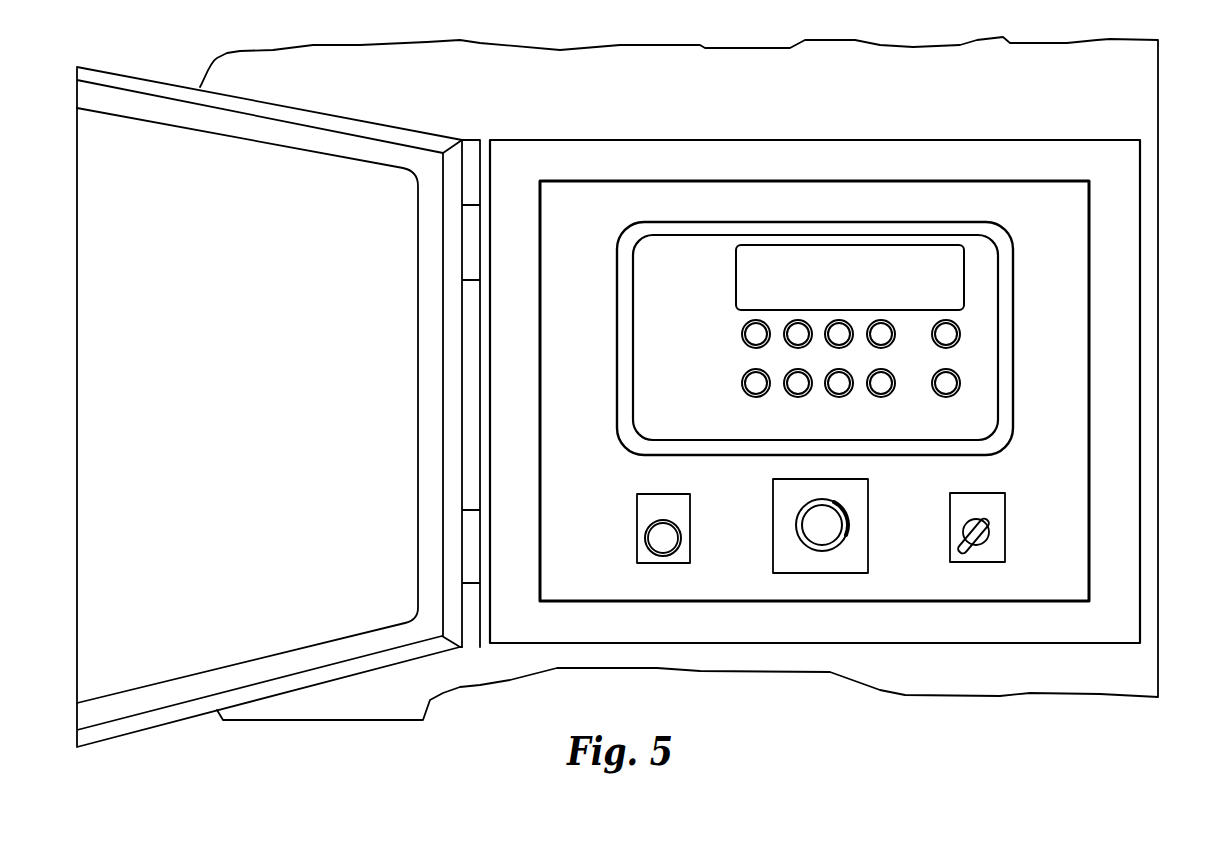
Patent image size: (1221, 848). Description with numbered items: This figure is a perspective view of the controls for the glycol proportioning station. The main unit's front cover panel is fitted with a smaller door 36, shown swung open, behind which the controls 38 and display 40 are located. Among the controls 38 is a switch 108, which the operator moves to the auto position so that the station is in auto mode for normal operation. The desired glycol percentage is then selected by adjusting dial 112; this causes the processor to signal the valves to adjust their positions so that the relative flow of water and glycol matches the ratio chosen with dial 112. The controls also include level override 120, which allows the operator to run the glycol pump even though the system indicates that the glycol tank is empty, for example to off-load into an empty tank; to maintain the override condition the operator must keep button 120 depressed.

The door 36 is at (185, 158).
The controls 38 is at (1022, 318).
The display 40 is at (913, 270).
The switch 108 is at (992, 530).
The dial 112 is at (819, 573).
The level override 120 is at (640, 537).